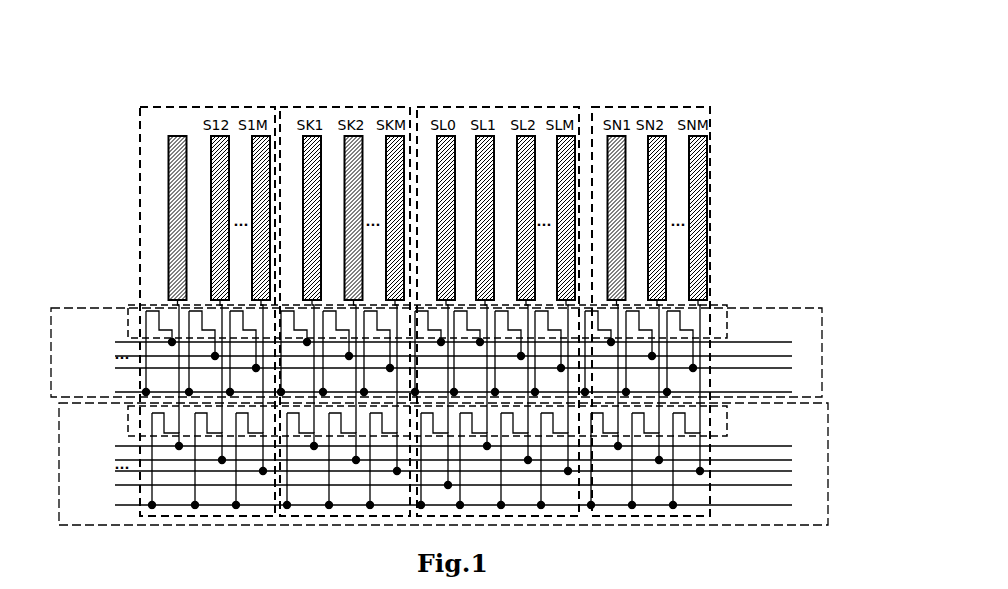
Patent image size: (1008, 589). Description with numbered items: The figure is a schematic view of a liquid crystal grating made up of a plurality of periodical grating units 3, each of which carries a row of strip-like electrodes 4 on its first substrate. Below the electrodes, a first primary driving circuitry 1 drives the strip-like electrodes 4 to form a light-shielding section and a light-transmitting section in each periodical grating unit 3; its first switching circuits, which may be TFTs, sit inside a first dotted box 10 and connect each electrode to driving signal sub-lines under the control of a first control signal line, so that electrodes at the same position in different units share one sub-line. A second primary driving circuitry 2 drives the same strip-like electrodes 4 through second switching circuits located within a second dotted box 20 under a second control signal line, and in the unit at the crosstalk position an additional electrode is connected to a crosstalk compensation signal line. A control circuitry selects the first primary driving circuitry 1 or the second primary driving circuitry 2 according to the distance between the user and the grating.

The first primary driving circuitry 1 is at (60, 327).
The second primary driving circuitry 2 is at (65, 463).
The periodical grating unit 3 is at (187, 112).
The strip-like electrode 4 is at (168, 212).
The first dotted box 10 is at (723, 324).
The second dotted box 20 is at (725, 420).